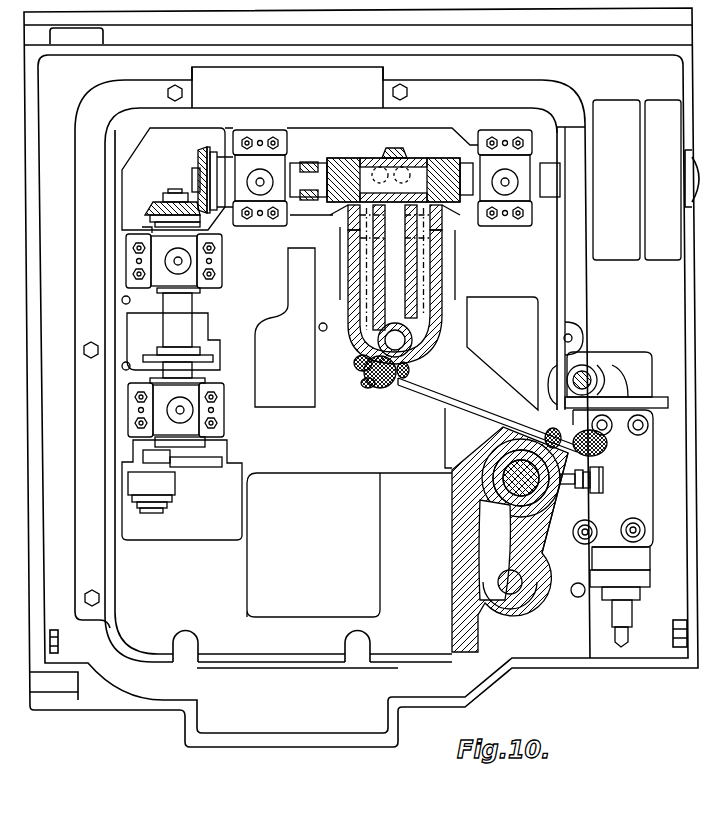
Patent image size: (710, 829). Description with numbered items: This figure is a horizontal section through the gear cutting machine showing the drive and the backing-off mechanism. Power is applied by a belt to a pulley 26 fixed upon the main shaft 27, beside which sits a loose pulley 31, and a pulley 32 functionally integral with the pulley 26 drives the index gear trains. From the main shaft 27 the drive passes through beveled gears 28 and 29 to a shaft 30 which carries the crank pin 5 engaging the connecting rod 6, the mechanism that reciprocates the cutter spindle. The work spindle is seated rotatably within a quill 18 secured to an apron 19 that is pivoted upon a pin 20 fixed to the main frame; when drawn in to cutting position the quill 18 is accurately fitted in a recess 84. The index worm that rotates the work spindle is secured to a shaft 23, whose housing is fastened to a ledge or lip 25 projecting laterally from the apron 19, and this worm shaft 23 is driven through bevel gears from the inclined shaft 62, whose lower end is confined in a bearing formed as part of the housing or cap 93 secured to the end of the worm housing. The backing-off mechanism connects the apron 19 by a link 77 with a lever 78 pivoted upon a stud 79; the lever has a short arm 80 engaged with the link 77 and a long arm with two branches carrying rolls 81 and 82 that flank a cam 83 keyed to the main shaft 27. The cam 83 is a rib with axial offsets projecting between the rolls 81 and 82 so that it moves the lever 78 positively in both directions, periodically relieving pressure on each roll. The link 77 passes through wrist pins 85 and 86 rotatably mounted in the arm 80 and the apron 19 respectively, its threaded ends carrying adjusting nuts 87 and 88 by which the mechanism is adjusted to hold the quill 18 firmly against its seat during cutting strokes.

The crank pin 5 is at (154, 513).
The connecting rod 6 is at (176, 483).
The quill 18 is at (465, 510).
The apron 19 is at (547, 540).
The pin 20 is at (525, 600).
The worm shaft 23 is at (627, 616).
The ledge or lip 25 is at (636, 497).
The pulley 26 is at (621, 250).
The main shaft 27 is at (420, 167).
The beveled gear 28 is at (202, 152).
The beveled gear 29 is at (152, 203).
The shaft 30 is at (168, 319).
The loose pulley 31 is at (664, 250).
The pulley 32 is at (575, 218).
The inclined shaft 62 is at (585, 372).
The link 77 is at (484, 414).
The lever 78 is at (408, 308).
The stud 79 is at (400, 340).
The short arm 80 is at (380, 385).
The roll 81 is at (348, 208).
The roll 82 is at (437, 207).
The cam 83 is at (395, 150).
The recess 84 is at (443, 488).
The wrist pin 85 is at (368, 385).
The wrist pin 86 is at (592, 442).
The adjusting nuts 87 is at (406, 368).
The adjusting nuts 88 is at (604, 468).
The housing or cap 93 is at (620, 375).